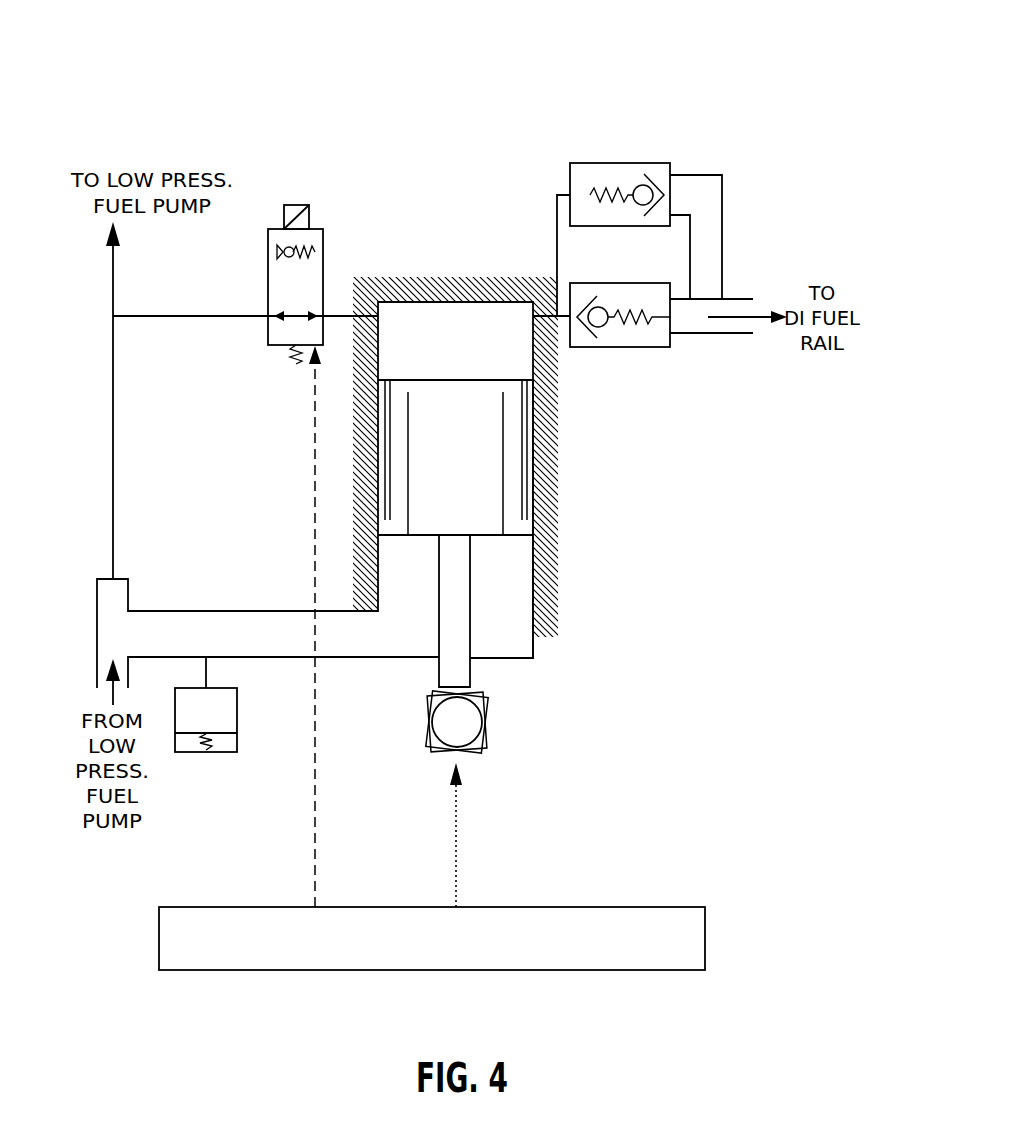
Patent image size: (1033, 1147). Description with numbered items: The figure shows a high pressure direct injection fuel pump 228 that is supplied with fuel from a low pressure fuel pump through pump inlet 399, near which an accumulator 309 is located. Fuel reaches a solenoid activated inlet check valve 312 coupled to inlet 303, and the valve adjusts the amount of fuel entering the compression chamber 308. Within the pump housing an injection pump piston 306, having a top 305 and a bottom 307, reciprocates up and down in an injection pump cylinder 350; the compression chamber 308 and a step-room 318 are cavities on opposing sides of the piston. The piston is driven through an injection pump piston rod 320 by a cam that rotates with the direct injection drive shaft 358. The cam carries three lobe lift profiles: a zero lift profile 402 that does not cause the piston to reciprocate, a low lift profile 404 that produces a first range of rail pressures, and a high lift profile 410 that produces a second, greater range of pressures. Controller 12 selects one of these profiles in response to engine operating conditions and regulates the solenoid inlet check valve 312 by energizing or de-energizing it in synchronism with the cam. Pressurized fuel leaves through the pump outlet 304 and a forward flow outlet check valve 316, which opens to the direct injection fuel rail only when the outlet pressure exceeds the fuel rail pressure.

The direct injection fuel pump 228 is at (755, 40).
The solenoid activated inlet check valve 312 is at (284, 205).
The inlet 303 is at (338, 316).
The compression chamber 308 is at (421, 331).
The pump outlet 304 is at (543, 300).
The forward flow outlet check valve 316 is at (612, 283).
The top 305 is at (483, 379).
The injection pump piston 306 is at (510, 465).
The injection pump cylinder 350 is at (536, 470).
The bottom 307 is at (517, 537).
The step-room 318 is at (513, 643).
The injection pump piston rod 320 is at (472, 665).
The high lift cam lobe profile 410 is at (488, 712).
The low lift cam lobe profile 404 is at (479, 752).
The zero lift cam lobe profile 402 is at (432, 748).
The direct injection drive shaft 358 is at (452, 733).
The pump inlet 399 is at (128, 579).
The accumulator 309 is at (237, 752).
The controller 12 is at (483, 949).